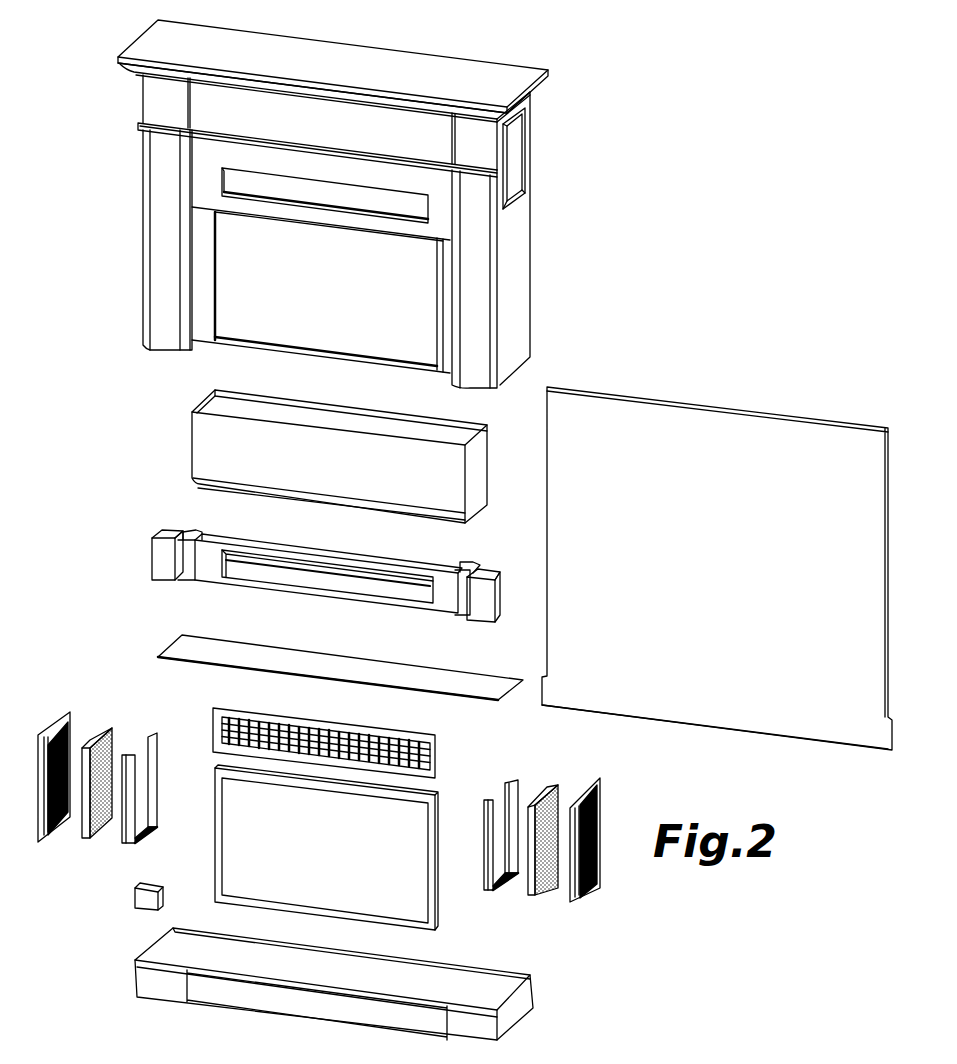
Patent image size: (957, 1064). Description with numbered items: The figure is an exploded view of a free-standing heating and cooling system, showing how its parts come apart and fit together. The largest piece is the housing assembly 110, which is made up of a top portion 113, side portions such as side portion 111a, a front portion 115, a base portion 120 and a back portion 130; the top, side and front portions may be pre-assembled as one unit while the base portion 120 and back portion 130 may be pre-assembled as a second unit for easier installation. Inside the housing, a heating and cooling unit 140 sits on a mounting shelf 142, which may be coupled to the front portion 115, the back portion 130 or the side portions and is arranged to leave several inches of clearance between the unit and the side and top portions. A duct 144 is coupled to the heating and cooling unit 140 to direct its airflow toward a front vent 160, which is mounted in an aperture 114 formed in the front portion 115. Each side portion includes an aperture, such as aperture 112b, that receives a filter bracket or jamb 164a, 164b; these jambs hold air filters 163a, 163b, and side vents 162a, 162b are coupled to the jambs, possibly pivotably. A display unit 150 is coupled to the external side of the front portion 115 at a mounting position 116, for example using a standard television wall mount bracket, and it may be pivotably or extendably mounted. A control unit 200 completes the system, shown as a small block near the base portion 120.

The housing assembly 110 is at (515, 145).
The side portion 111a is at (520, 270).
The aperture 112b is at (522, 183).
The top portion 113 is at (487, 70).
The aperture 114 is at (230, 182).
The front portion 115 is at (167, 288).
The mounting position 116 is at (253, 333).
The base portion 120 is at (152, 985).
The back portion 130 is at (633, 420).
The heating and cooling unit 140 is at (208, 447).
The mounting shelf 142 is at (300, 648).
The duct 144 is at (163, 553).
The display unit 150 is at (217, 845).
The front vent 160 is at (337, 722).
The side vent 162a is at (588, 788).
The side vent 162b is at (55, 722).
The air filter 163a is at (545, 795).
The air filter 163b is at (98, 730).
The filter bracket or jamb 164a is at (488, 800).
The filter bracket or jamb 164b is at (152, 735).
The control unit 200 is at (133, 900).